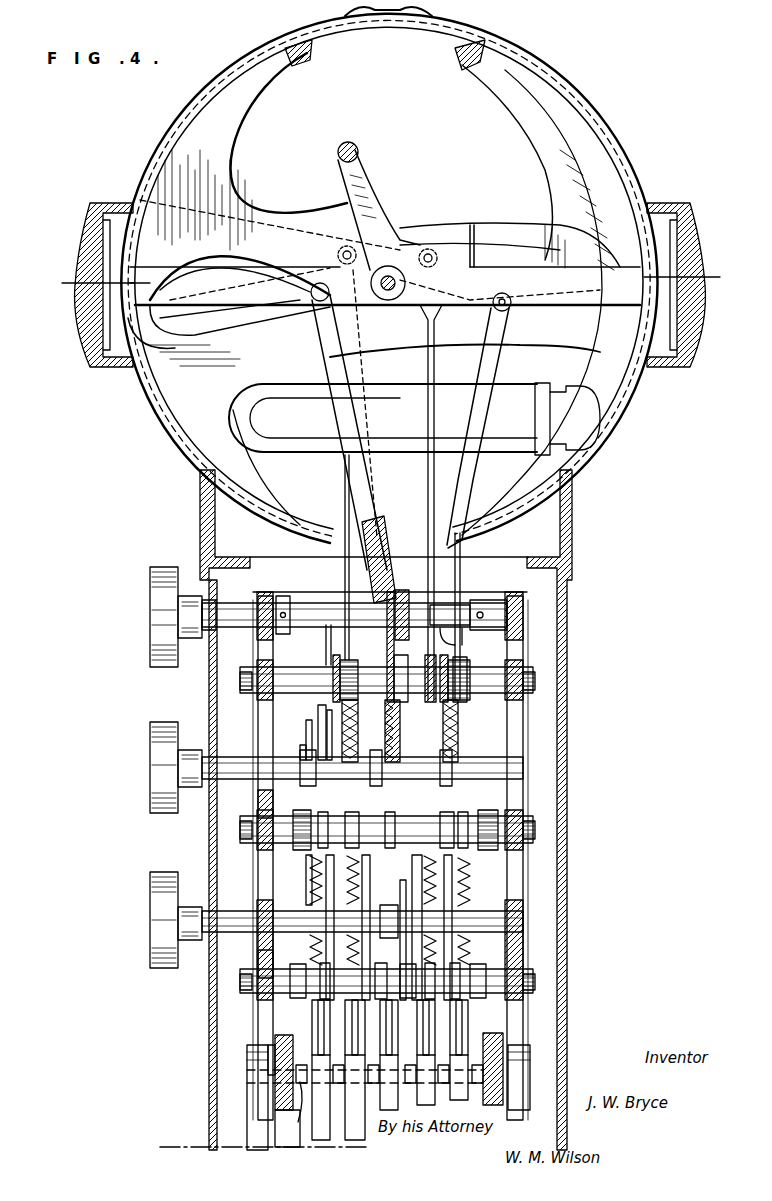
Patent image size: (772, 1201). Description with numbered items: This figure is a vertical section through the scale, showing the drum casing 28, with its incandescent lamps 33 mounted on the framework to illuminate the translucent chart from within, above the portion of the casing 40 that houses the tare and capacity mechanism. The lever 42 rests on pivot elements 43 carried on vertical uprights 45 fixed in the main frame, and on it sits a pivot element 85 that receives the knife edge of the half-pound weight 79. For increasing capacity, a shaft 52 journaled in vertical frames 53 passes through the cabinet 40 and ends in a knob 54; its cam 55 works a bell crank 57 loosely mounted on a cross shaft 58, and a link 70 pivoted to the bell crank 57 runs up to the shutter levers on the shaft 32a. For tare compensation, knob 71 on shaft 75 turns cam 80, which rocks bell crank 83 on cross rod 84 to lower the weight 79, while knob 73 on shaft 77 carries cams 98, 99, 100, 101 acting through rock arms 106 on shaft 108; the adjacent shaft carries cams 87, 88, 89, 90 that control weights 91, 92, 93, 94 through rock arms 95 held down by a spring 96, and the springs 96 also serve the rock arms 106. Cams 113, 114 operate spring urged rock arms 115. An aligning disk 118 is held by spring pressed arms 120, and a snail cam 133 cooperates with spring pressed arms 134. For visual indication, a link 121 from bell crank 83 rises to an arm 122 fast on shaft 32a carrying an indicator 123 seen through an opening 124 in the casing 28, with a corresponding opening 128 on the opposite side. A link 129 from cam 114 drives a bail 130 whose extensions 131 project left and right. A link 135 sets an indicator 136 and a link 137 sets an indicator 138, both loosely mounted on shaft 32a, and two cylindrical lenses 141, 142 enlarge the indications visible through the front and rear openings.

The casing 28 is at (612, 82).
The incandescent lamps 33 is at (302, 452).
The cabinet 40 is at (572, 740).
The lever 42 is at (285, 1040).
The pivot elements 43 is at (270, 1058).
The vertical uprights 45 is at (255, 1113).
The shaft 52 is at (305, 628).
The vertical frames 53 is at (262, 735).
The knob 54 is at (166, 575).
The cam 55 is at (405, 593).
The bell crank 57 is at (396, 665).
The cross shaft 58 is at (478, 672).
The link 70 is at (375, 535).
The knob 71 is at (160, 970).
The knob 73 is at (155, 805).
The shaft 75 is at (248, 918).
The shaft 77 is at (240, 780).
The weight 79 is at (389, 1052).
The cam 80 is at (401, 935).
The bell crank 83 is at (380, 965).
The cross rod 84 is at (510, 965).
The pivot element 85 is at (291, 1113).
The cam 87 is at (333, 888).
The cam 88 is at (370, 892).
The cam 89 is at (422, 864).
The cam 90 is at (449, 922).
The weight 91 is at (321, 1048).
The weight 92 is at (355, 1048).
The weight 93 is at (426, 1052).
The weight 94 is at (459, 1052).
The rock arm 95 is at (310, 985).
The spring 96 is at (312, 872).
The cam 98 is at (316, 712).
The cam 99 is at (358, 726).
The cam 100 is at (401, 730).
The cam 101 is at (458, 728).
The rock arms 106 is at (318, 820).
The shaft 108 is at (520, 815).
The cam 113 is at (333, 648).
The cam 114 is at (449, 625).
The rock arms 115 is at (338, 682).
The aligning disk 118 is at (305, 748).
The spring pressed arms 120 is at (270, 850).
The link 121 is at (362, 468).
The arm 122 is at (240, 300).
The indicator 123 is at (184, 345).
The opening 124 is at (95, 285).
The opening 128 is at (697, 278).
The link 129 is at (480, 420).
The bail 130 is at (358, 152).
The extensions 131 is at (210, 240).
The snail cam 133 is at (336, 700).
The spring pressed arms 134 is at (437, 980).
The link 135 is at (428, 418).
The indicator 136 is at (283, 380).
The link 137 is at (343, 517).
The indicator 138 is at (265, 202).
The cylindrical lens 141 is at (75, 272).
The cylindrical lens 142 is at (703, 300).
The shaft 32a is at (395, 300).